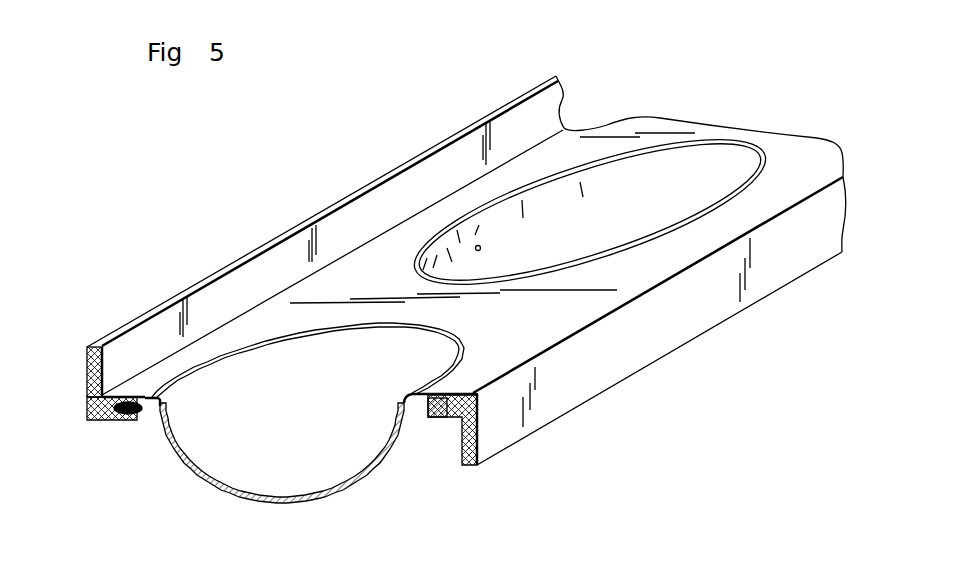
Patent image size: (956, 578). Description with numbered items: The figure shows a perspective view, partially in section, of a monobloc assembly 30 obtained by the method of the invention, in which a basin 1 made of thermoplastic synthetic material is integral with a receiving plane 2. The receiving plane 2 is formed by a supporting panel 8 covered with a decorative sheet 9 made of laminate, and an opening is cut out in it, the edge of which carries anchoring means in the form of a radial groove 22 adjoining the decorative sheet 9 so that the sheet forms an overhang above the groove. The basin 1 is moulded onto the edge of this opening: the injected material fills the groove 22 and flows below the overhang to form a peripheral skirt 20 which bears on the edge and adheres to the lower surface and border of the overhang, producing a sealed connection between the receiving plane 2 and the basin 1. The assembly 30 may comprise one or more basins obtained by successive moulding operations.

The basin 1 is at (490, 213).
The receiving plane 2 is at (492, 229).
The supporting panel 8 is at (463, 413).
The decorative sheet 9 is at (128, 396).
The peripheral skirt 20 is at (143, 417).
The radial groove 22 is at (115, 420).
The monobloc assembly 30 is at (320, 192).